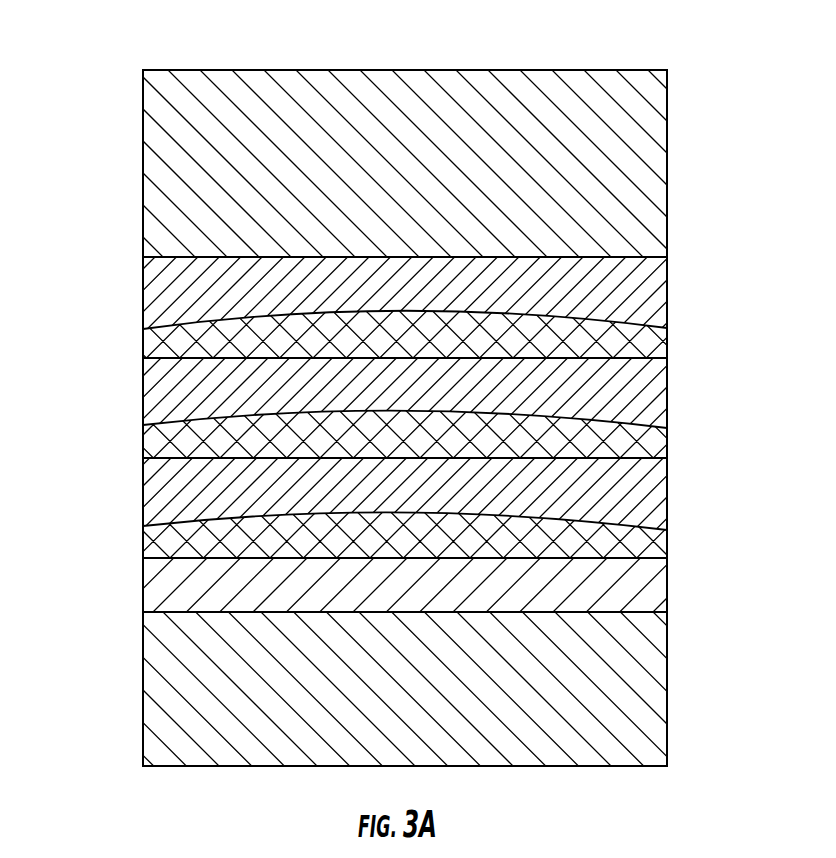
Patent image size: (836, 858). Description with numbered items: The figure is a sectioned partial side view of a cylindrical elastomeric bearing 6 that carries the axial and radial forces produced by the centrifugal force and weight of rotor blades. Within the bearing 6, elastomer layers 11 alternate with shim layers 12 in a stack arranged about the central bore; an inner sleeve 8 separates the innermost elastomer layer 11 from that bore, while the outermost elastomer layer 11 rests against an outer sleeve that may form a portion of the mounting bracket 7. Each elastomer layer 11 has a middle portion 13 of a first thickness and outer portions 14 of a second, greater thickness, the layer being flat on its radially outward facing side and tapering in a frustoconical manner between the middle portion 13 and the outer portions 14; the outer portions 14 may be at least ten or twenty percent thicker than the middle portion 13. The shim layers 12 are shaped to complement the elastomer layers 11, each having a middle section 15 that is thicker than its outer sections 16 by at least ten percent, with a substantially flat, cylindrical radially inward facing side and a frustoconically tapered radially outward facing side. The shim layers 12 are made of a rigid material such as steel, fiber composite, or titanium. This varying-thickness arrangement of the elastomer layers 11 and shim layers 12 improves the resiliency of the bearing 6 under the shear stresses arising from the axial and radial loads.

The cylindrical elastomeric bearing 6 is at (90, 196).
The mounting bracket 7 is at (650, 98).
The inner sleeve 8 is at (608, 743).
The elastomer layers 11 is at (143, 575).
The shim layers 12 is at (668, 542).
The middle portion 13 is at (292, 487).
The outer portions 14 is at (640, 507).
The middle section 15 is at (492, 537).
The outer sections 16 is at (165, 542).